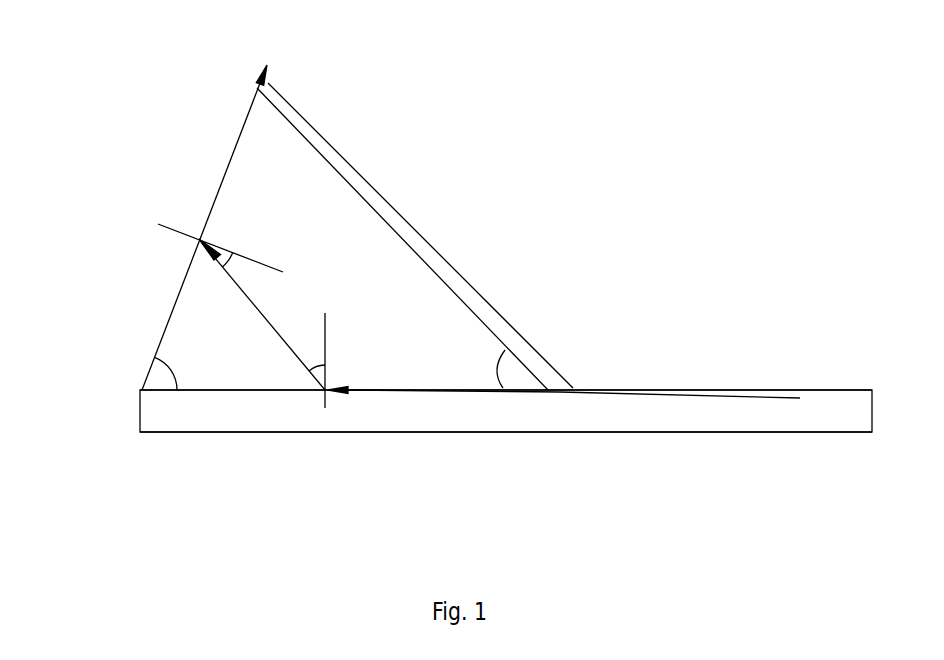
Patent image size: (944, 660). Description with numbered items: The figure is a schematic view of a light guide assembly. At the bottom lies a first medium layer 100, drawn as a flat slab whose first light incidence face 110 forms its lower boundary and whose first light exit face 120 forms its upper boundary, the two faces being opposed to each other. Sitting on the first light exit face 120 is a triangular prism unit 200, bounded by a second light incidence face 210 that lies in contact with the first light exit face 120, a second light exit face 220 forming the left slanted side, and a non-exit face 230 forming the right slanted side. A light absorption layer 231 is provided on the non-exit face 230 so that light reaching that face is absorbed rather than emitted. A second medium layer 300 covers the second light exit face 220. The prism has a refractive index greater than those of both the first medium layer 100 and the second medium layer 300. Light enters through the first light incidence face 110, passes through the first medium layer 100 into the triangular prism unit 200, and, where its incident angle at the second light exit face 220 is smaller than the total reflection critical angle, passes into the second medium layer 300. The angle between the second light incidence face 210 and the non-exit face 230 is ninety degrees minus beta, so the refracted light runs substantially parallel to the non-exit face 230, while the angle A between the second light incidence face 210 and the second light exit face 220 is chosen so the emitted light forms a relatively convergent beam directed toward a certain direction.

The first medium layer 100 is at (765, 418).
The first light incidence face 110 is at (507, 432).
The first light exit face 120 is at (703, 390).
The triangular prism unit 200 is at (324, 234).
The second light incidence face 210 is at (290, 390).
The second light exit face 220 is at (165, 325).
The non-exit face 230 is at (347, 180).
The light absorption layer 231 is at (495, 320).
The second medium layer 300 is at (187, 175).